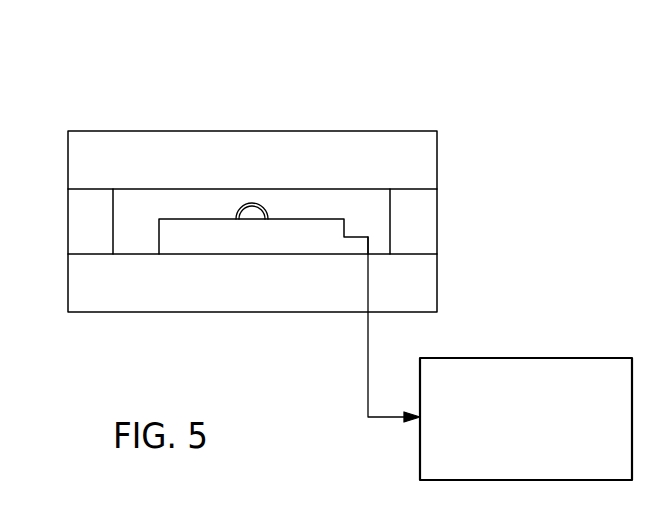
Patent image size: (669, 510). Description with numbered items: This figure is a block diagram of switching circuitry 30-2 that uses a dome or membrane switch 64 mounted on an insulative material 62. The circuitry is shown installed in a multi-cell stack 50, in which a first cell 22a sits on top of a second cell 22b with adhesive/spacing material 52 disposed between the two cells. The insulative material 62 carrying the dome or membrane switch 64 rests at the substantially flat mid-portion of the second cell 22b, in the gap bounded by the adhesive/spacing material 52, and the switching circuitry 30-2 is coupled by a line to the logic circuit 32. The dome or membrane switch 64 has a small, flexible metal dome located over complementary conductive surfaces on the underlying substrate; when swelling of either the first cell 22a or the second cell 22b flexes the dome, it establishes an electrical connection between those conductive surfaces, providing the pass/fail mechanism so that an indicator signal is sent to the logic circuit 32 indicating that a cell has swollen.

The multi-cell stack 50 is at (515, 100).
The first cell 22a is at (438, 160).
The second cell 22b is at (438, 283).
The adhesive/spacing material 52 is at (67, 222).
The insulative material 62 is at (158, 236).
The dome or membrane switch 64 is at (236, 215).
The switching circuitry 30-2 is at (326, 213).
The logic circuit 32 is at (580, 358).